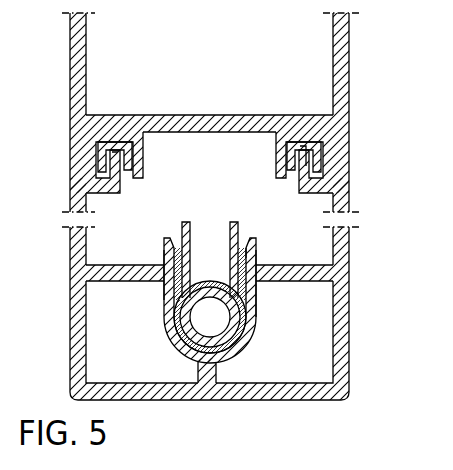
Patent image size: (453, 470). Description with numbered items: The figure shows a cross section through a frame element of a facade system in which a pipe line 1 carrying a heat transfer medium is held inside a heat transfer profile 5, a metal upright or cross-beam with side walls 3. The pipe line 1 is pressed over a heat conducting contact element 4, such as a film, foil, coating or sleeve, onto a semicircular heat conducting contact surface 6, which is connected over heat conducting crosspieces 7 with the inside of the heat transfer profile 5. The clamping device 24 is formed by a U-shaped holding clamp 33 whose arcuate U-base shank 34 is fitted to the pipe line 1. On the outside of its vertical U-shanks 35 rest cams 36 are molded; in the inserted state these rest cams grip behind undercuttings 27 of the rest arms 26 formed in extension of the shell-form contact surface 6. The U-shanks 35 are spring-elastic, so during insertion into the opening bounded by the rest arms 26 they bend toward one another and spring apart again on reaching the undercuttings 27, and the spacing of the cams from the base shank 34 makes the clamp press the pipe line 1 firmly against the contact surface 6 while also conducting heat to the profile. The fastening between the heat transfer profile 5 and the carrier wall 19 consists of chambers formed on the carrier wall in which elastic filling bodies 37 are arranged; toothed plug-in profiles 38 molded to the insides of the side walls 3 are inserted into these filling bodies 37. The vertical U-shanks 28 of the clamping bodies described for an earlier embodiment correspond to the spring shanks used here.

The pipe line 1 is at (190, 340).
The side walls 3 is at (350, 305).
The heat conducting contact element 4 is at (174, 345).
The heat transfer profile 5 is at (352, 357).
The heat conducting contact surface 6 is at (198, 392).
The heat conducting crosspieces 7 is at (248, 352).
The carrier wall 19 is at (224, 115).
The clamping device 24 is at (215, 221).
The rest arms 26 is at (262, 265).
The undercuttings 27 is at (258, 243).
The vertical U-shanks 28 is at (350, 71).
The U-shaped holding clamp 33 is at (187, 222).
The U-base shank 34 is at (212, 281).
The vertical U-shanks 35 is at (172, 290).
The rest cams 36 is at (292, 133).
The filling bodies 37 is at (337, 134).
The plug-in profiles 38 is at (315, 133).